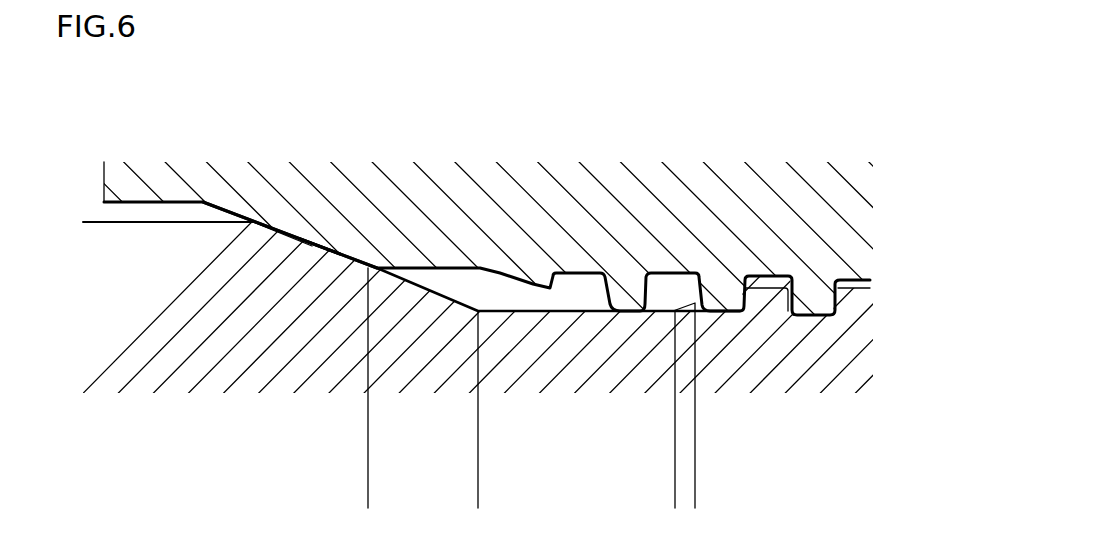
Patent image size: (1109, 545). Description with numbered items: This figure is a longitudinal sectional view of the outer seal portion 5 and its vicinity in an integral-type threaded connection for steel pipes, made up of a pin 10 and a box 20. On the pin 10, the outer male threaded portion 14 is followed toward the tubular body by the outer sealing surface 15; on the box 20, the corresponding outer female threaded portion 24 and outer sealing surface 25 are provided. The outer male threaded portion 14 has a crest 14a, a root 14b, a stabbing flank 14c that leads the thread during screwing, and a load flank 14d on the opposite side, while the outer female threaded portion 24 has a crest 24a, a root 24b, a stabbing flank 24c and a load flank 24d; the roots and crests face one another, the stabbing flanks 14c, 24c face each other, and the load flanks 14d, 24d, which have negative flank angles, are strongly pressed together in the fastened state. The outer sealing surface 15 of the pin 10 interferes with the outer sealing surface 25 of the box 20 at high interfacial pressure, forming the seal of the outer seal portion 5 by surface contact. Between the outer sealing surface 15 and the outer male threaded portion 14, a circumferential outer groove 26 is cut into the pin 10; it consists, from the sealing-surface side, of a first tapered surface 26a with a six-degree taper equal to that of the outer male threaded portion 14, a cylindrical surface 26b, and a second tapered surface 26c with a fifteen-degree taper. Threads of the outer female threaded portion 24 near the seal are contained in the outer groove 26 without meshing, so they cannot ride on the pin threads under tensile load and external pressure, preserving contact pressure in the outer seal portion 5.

The outer seal portion 5 is at (360, 105).
The pin 10 is at (141, 416).
The outer male threaded portion 14 is at (805, 335).
The crest 14a is at (862, 284).
The root 14b is at (834, 280).
The stabbing flank 14c is at (810, 300).
The load flank 14d is at (847, 276).
The outer sealing surface 15 is at (318, 250).
The box 20 is at (170, 140).
The outer female threaded portion 24 is at (710, 244).
The crest 24a is at (815, 318).
The root 24b is at (853, 290).
The stabbing flank 24c is at (792, 300).
The load flank 24d is at (848, 313).
The outer sealing surface 25 is at (327, 248).
The outer groove 26 is at (562, 311).
The first tapered surface 26a is at (468, 502).
The cylindrical surface 26b is at (665, 502).
The second tapered surface 26c is at (695, 498).